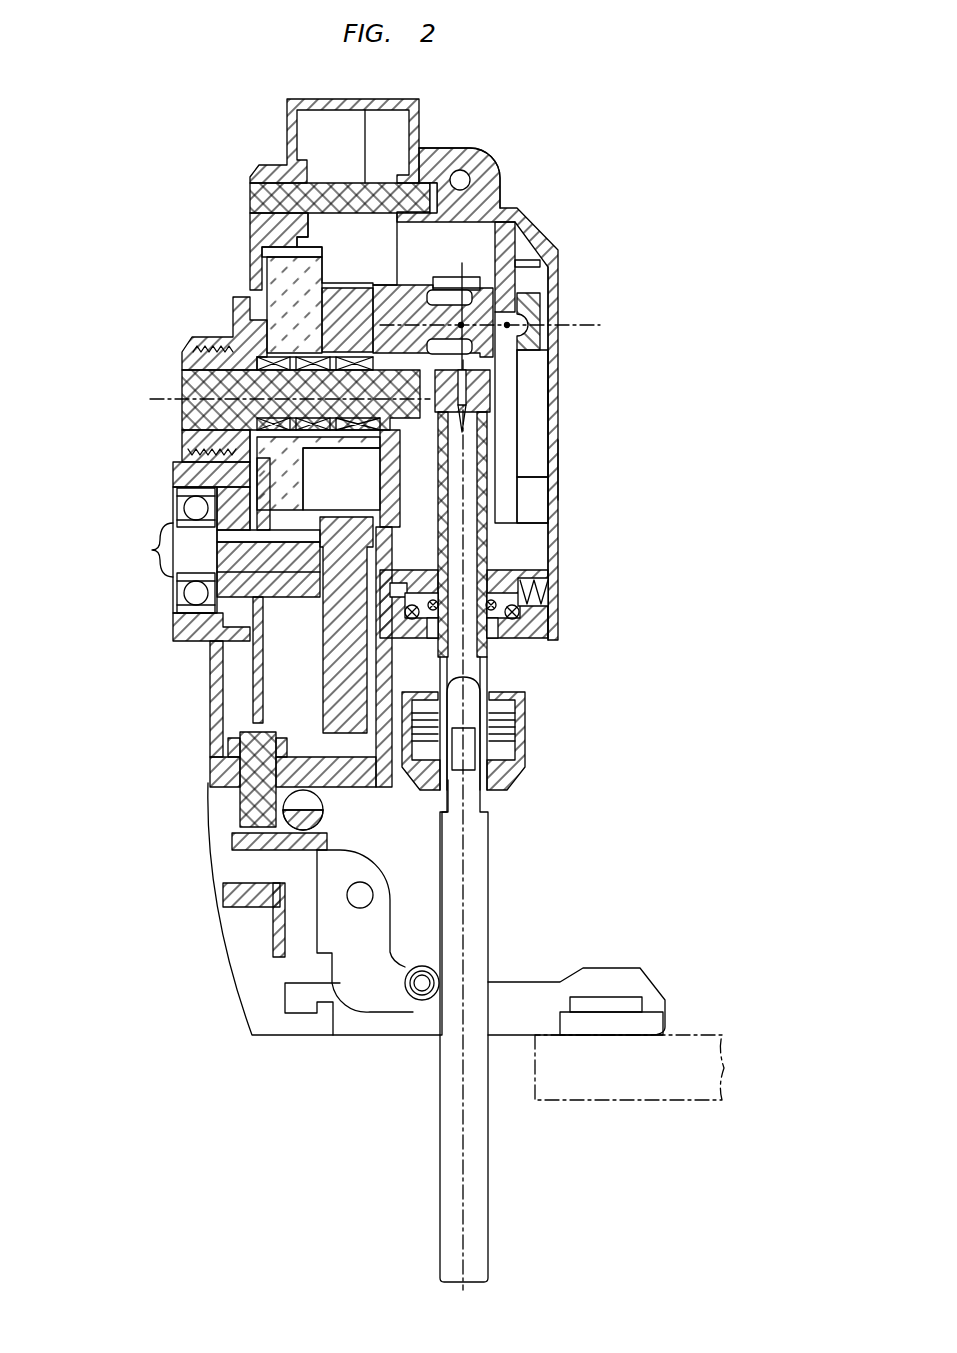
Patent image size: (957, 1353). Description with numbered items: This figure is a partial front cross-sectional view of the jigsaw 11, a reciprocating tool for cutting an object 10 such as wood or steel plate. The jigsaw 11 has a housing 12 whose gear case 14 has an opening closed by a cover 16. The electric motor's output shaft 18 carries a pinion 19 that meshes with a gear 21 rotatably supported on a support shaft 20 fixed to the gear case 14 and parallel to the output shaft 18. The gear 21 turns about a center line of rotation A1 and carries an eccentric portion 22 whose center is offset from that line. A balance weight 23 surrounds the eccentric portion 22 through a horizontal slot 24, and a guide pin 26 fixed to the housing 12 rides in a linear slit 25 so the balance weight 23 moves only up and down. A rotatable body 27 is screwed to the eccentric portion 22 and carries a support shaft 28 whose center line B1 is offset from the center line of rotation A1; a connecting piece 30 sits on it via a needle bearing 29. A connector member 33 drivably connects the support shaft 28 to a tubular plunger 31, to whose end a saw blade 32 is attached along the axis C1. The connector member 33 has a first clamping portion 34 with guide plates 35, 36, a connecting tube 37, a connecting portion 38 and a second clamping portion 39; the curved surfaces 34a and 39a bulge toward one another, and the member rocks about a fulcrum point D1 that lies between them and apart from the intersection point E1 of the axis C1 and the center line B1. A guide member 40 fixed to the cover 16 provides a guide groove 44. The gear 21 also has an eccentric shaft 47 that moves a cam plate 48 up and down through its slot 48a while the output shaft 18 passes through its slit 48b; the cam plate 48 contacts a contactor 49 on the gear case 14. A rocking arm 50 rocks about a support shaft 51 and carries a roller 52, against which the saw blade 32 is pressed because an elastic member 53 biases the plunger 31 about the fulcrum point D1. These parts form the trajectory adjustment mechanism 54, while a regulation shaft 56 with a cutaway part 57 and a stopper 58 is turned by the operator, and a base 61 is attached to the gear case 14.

The object 10 is at (690, 1033).
The jigsaw 11 is at (527, 126).
The housing 12 is at (433, 143).
The gear case 14 is at (285, 143).
The cover 16 is at (463, 505).
The output shaft 18 is at (157, 550).
The pinion 19 is at (228, 588).
The support shaft 20 is at (182, 388).
The gear 21 is at (262, 262).
The eccentric portion 22 is at (255, 478).
The balance weight 23 is at (318, 682).
The slot 24 is at (290, 558).
The slit 25 is at (335, 232).
The guide pin 26 is at (250, 200).
The rotatable body 27 is at (440, 277).
The support shaft 28 is at (440, 293).
The needle bearing 29 is at (440, 372).
The connecting piece 30 is at (507, 495).
The plunger 31 is at (545, 598).
The saw blade 32 is at (497, 877).
The connector member 33 is at (538, 364).
The first clamping portion 34 is at (500, 440).
The surface 34a is at (563, 468).
The guide plate 35 is at (455, 322).
The guide plate 36 is at (525, 515).
The connecting tube 37 is at (493, 548).
The connecting portion 38 is at (548, 395).
The second clamping portion 39 is at (528, 300).
The surface 39a is at (528, 264).
The guide member 40 is at (470, 610).
The guide groove 44 is at (523, 533).
The eccentric shaft 47 is at (236, 449).
The cam plate 48 is at (262, 690).
The slot 48a is at (238, 352).
The slit 48b is at (296, 598).
The contactor 49 is at (285, 806).
The rocking arm 50 is at (297, 962).
The support shaft 51 is at (307, 950).
The roller 52 is at (424, 1003).
The elastic member 53 is at (535, 612).
The trajectory adjustment mechanism 54 is at (233, 868).
The regulation shaft 56 is at (345, 895).
The cutaway part 57 is at (258, 790).
The stopper 58 is at (296, 840).
The base 61 is at (527, 990).
The center line of rotation A1 is at (175, 399).
The center line B1 is at (548, 325).
The axis C1 is at (466, 836).
The fulcrum point D1 is at (510, 327).
The intersection point E1 is at (345, 302).